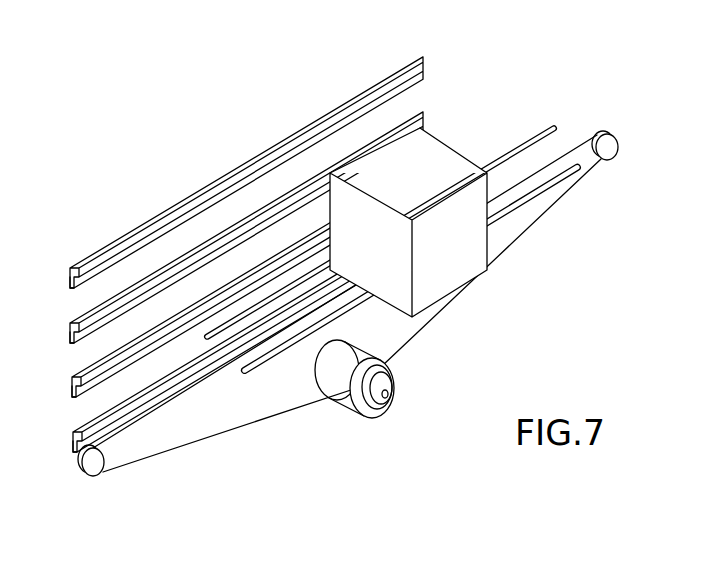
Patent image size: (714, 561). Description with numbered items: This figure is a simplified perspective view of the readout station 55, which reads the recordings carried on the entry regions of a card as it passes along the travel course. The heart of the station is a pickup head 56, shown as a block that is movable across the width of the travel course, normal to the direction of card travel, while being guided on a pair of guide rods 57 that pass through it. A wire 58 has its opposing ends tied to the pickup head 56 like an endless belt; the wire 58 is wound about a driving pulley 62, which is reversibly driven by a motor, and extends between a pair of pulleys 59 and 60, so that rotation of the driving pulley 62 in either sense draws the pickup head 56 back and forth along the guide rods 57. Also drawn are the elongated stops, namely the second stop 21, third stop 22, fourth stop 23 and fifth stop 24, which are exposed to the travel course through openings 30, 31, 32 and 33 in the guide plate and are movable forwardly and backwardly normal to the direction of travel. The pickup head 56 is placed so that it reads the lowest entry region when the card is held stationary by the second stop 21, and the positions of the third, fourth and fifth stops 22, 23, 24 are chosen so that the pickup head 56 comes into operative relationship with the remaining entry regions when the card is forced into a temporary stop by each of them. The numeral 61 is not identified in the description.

The second stop 21 is at (167, 222).
The third stop 22 is at (100, 306).
The fourth stop 23 is at (83, 371).
The fifth stop 24 is at (197, 365).
The opening 30 is at (70, 283).
The opening 31 is at (72, 342).
The opening 32 is at (72, 396).
The opening 33 is at (72, 447).
The readout station 55 is at (433, 100).
The pickup head 56 is at (433, 158).
The guide rods 57 is at (541, 190).
The wire 58 is at (523, 233).
The pulley 59 is at (610, 147).
The pulley 60 is at (93, 468).
The drive motor 61 is at (325, 406).
The driving pulley 62 is at (379, 406).